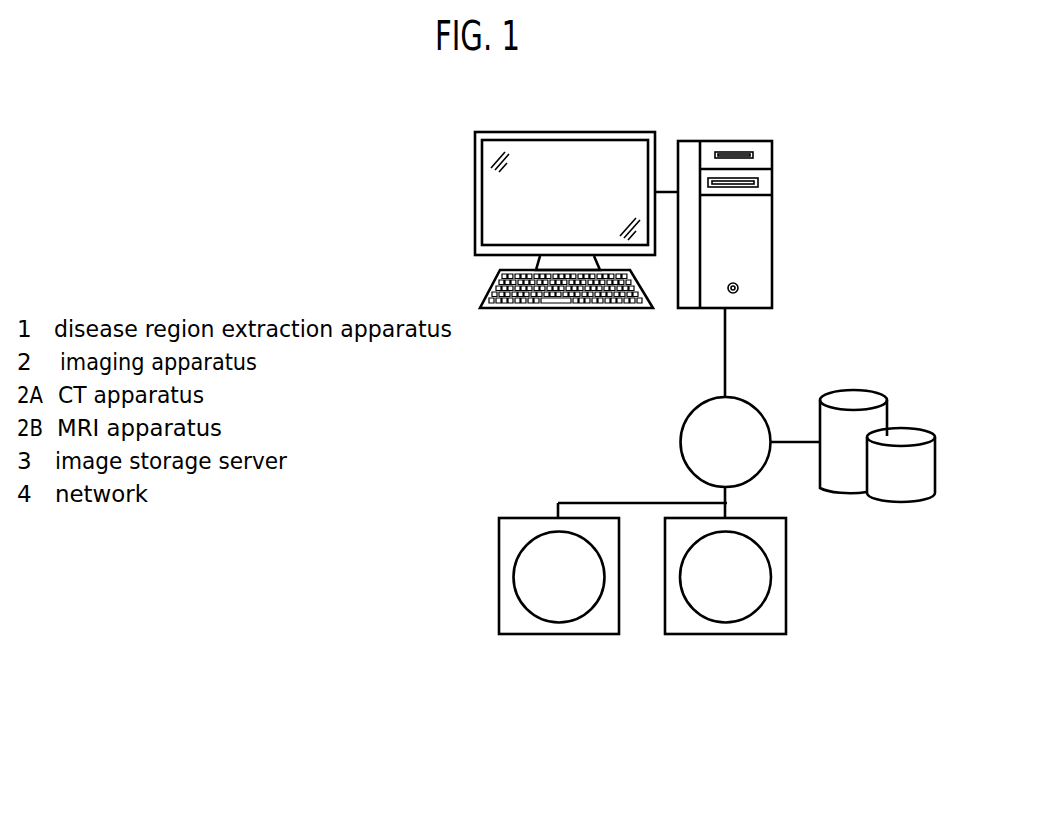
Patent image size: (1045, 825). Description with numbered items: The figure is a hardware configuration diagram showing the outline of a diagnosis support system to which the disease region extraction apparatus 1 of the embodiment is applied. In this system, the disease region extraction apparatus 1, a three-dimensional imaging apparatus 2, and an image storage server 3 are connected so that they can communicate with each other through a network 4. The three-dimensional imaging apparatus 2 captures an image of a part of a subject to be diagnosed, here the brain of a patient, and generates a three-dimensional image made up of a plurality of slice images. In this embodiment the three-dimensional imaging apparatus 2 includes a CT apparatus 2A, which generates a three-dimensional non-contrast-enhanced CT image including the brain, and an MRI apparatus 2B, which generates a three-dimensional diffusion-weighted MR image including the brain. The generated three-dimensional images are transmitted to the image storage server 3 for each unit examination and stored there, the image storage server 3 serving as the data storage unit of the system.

The disease region extraction apparatus 1 is at (737, 137).
The three-dimensional imaging apparatus 2 is at (642, 639).
The CT apparatus 2A is at (548, 636).
The MRI apparatus 2B is at (725, 613).
The image storage server 3 is at (854, 493).
The network 4 is at (752, 401).